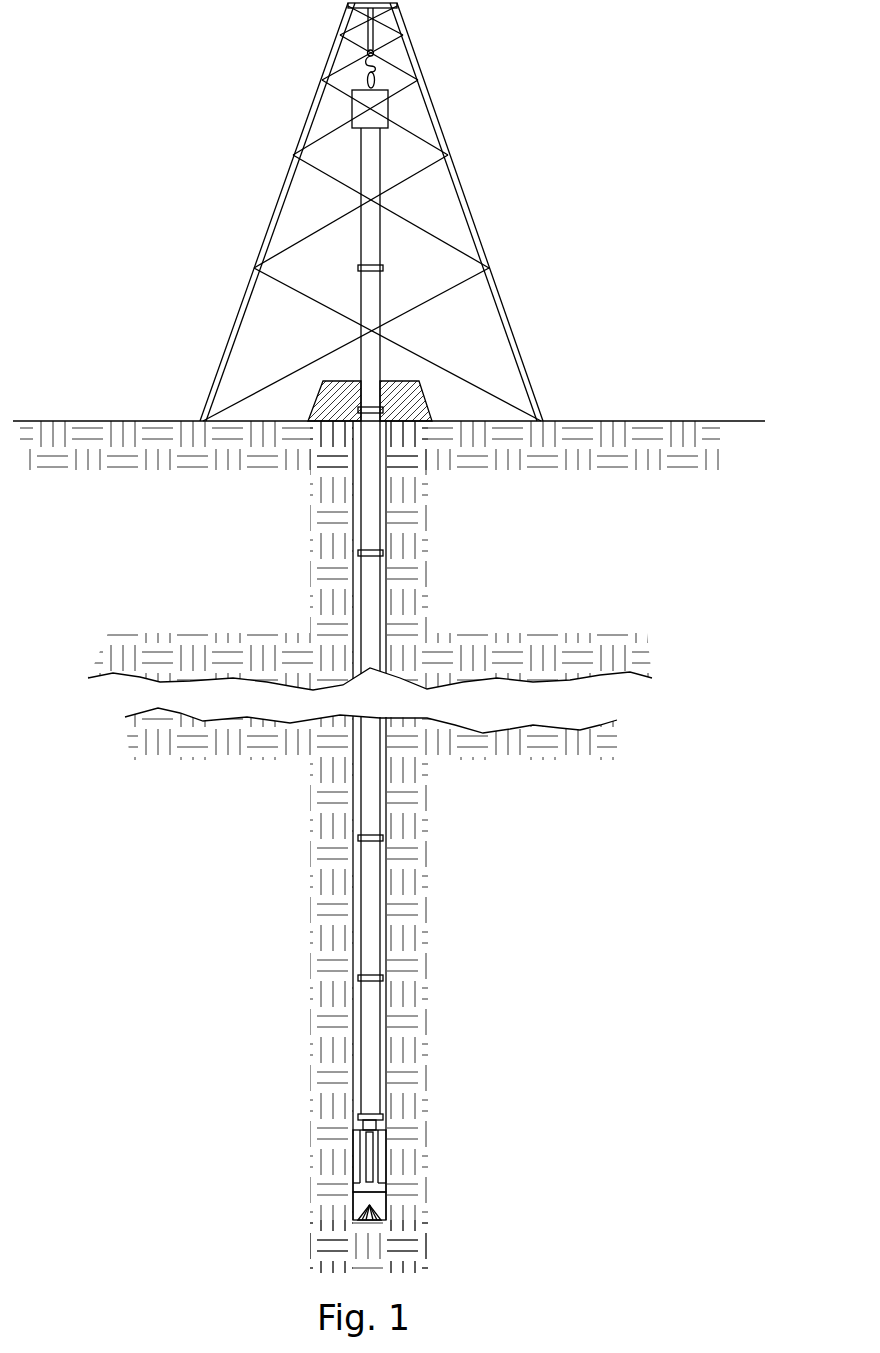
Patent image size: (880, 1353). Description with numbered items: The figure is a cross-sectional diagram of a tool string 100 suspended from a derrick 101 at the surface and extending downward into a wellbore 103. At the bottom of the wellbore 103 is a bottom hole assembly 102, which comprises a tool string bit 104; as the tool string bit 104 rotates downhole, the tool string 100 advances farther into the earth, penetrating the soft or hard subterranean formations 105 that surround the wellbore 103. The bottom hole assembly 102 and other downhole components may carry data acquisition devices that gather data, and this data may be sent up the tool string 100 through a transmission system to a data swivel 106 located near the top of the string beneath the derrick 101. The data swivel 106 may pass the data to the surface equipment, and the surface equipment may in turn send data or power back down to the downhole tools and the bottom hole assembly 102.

The tool string 100 is at (440, 831).
The derrick 101 is at (442, 136).
The bottom hole assembly 102 is at (345, 1191).
The wellbore 103 is at (353, 822).
The tool string bit 104 is at (405, 1197).
The subterranean formations 105 is at (548, 568).
The data swivel 106 is at (365, 100).